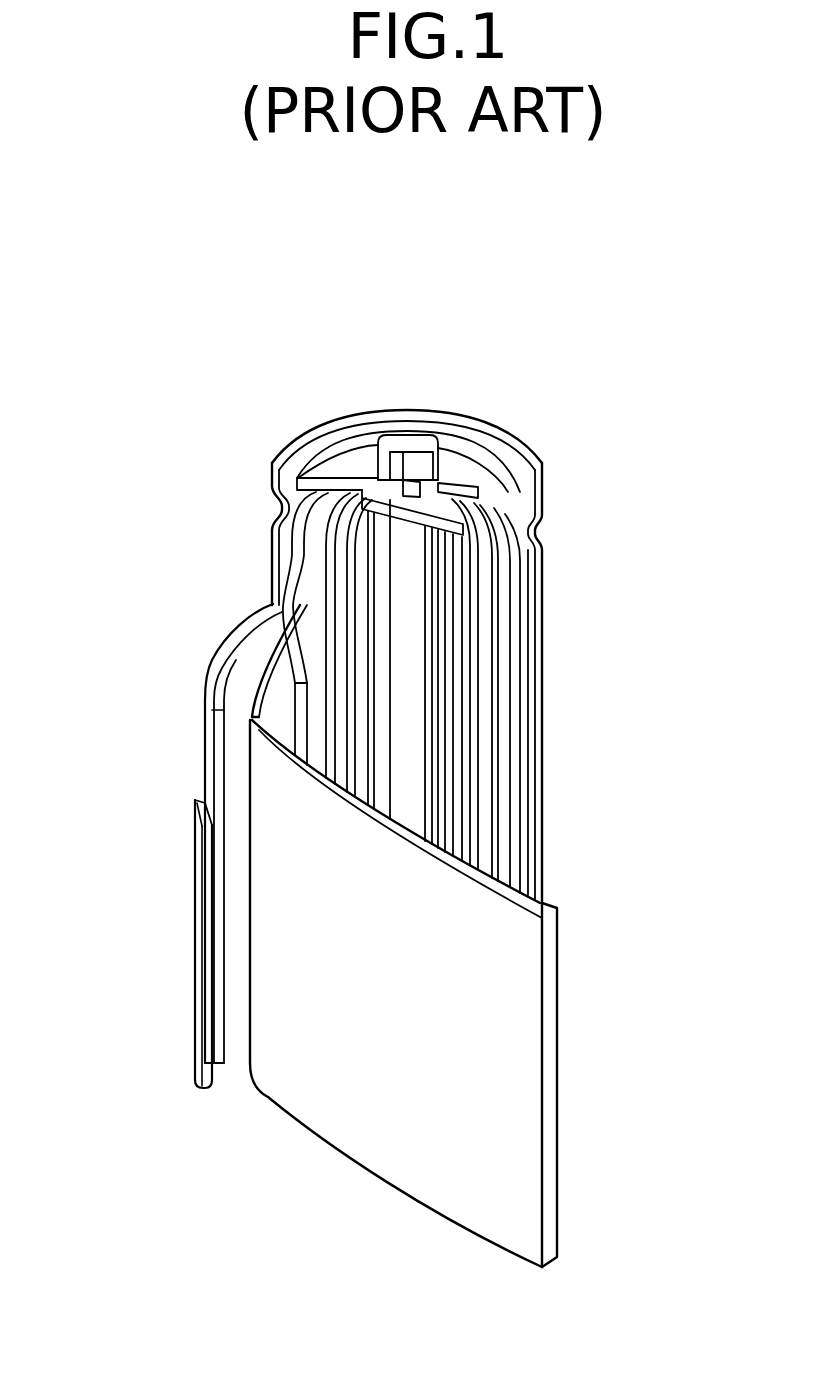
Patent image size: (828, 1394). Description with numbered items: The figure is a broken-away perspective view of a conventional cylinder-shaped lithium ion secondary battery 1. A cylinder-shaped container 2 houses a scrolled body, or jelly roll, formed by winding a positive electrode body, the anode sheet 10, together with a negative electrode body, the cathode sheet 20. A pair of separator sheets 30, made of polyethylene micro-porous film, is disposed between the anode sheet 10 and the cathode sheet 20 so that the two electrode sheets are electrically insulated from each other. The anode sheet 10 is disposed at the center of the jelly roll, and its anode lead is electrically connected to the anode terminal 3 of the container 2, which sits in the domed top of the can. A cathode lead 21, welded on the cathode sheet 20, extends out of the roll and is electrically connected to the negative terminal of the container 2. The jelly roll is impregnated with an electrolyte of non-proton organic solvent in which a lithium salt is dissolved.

The lithium ion secondary battery 1 is at (268, 400).
The cylinder-shaped container 2 is at (542, 585).
The anode terminal 3 is at (410, 443).
The anode sheet 10 is at (300, 625).
The cathode sheet 20 is at (205, 680).
The cathode lead 21 is at (207, 922).
The separator sheet 30 is at (522, 1068).